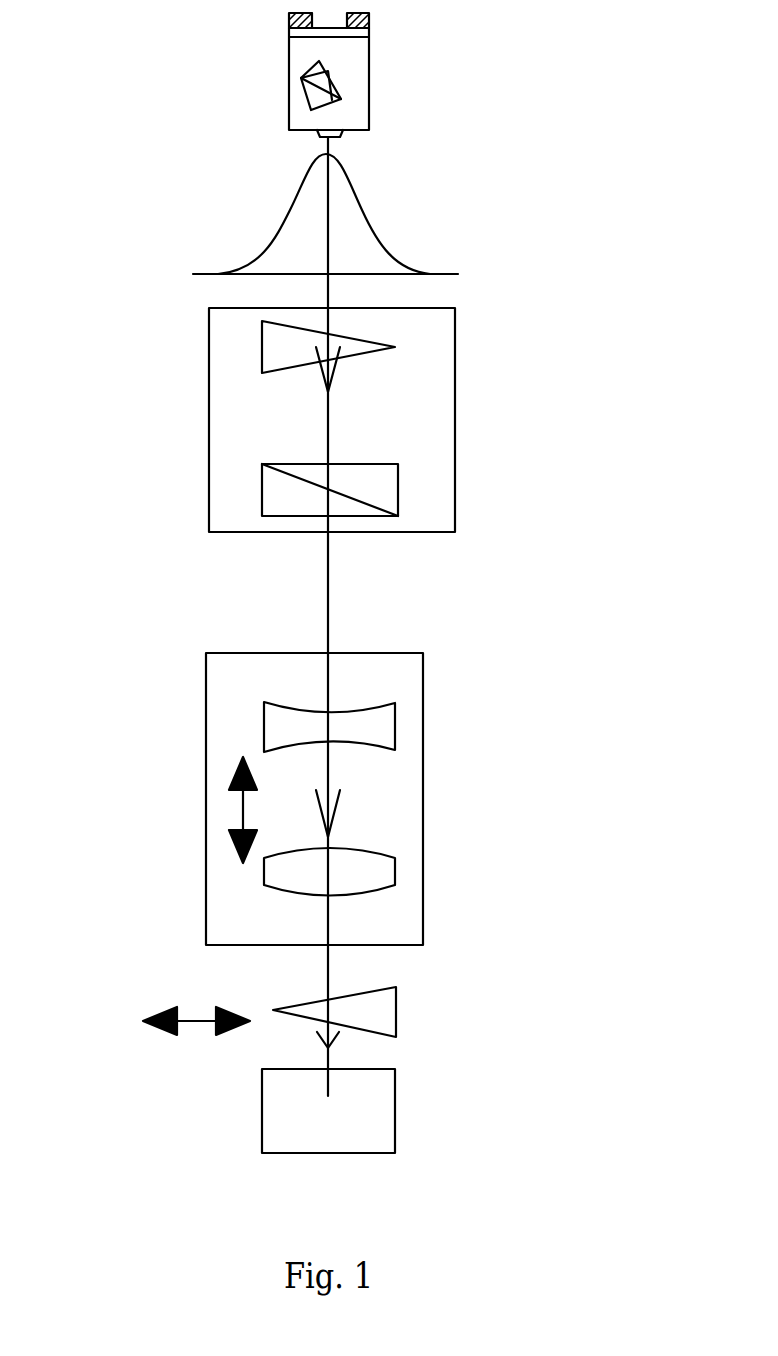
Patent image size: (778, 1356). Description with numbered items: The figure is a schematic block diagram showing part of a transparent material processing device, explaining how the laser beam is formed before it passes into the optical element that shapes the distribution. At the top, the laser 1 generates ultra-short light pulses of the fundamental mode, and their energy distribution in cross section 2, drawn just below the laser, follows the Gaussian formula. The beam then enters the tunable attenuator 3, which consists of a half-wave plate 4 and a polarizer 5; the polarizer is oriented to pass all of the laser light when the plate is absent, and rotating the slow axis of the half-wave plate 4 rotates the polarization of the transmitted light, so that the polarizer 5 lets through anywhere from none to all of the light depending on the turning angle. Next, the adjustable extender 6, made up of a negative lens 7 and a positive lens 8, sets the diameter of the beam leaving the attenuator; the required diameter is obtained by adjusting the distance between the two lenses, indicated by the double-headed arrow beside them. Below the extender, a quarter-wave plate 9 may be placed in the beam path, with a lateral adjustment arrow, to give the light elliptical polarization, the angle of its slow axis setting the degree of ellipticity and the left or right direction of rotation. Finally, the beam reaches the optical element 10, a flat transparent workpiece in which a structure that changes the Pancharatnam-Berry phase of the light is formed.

The laser 1 is at (289, 111).
The energy distribution in cross section 2 is at (270, 238).
The tunable attenuator 3 is at (455, 359).
The half-wave plate 4 is at (238, 361).
The polarizer 5 is at (242, 484).
The adjustable extender 6 is at (413, 676).
The negative lens 7 is at (273, 723).
The positive lens 8 is at (264, 884).
The quarter-wave plate 9 is at (292, 1006).
The optical element 10 is at (270, 1138).